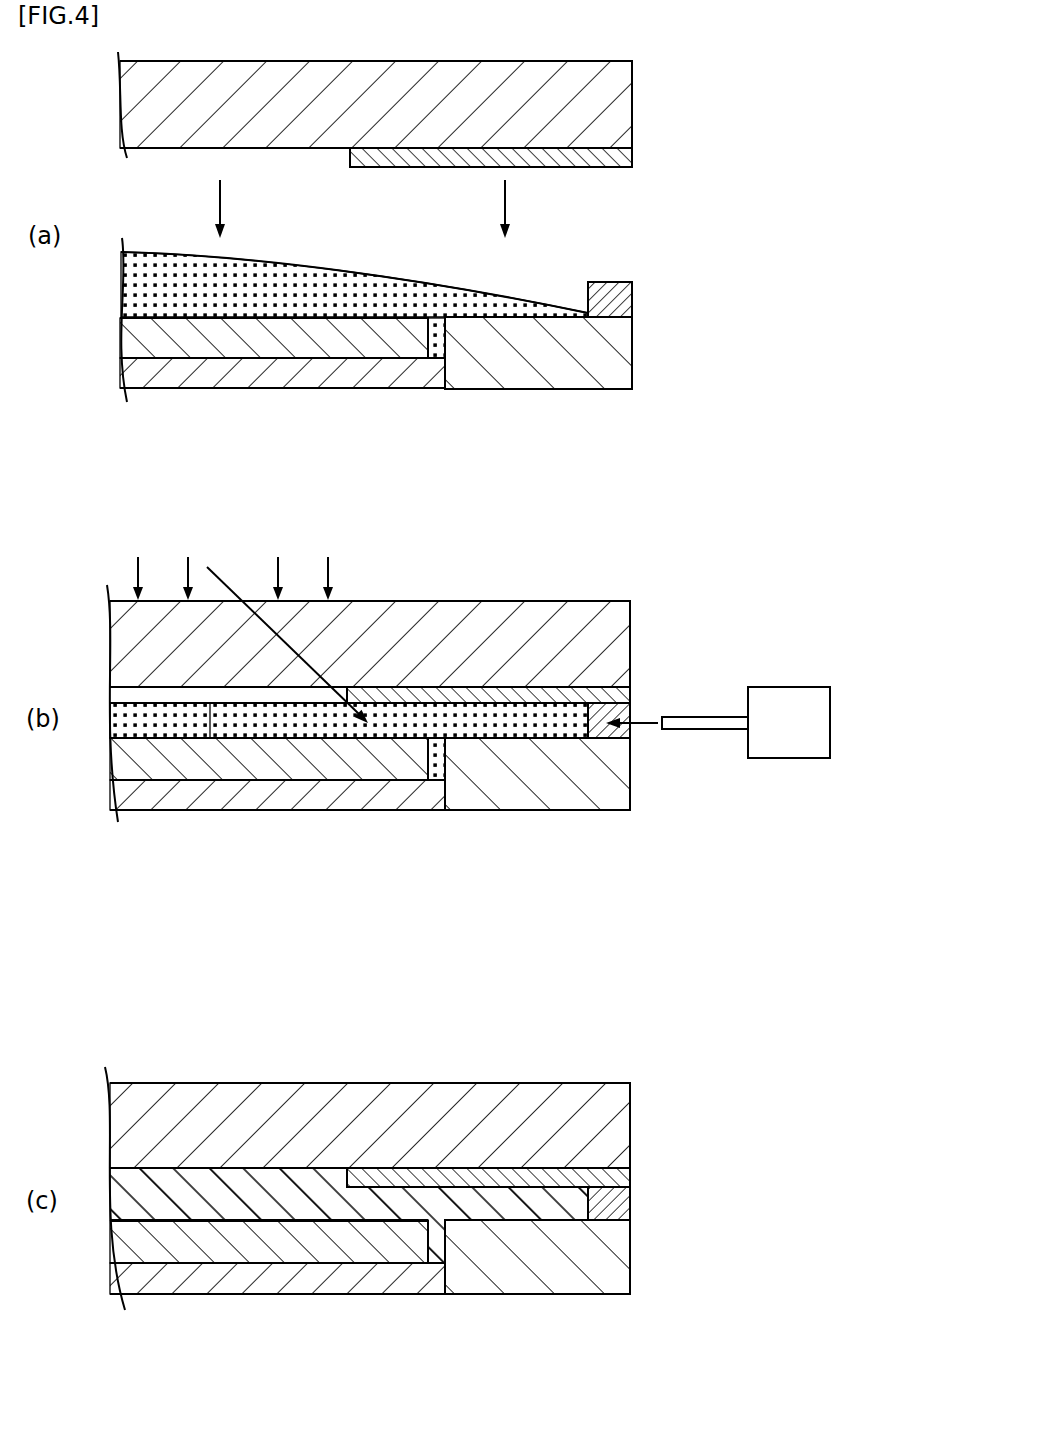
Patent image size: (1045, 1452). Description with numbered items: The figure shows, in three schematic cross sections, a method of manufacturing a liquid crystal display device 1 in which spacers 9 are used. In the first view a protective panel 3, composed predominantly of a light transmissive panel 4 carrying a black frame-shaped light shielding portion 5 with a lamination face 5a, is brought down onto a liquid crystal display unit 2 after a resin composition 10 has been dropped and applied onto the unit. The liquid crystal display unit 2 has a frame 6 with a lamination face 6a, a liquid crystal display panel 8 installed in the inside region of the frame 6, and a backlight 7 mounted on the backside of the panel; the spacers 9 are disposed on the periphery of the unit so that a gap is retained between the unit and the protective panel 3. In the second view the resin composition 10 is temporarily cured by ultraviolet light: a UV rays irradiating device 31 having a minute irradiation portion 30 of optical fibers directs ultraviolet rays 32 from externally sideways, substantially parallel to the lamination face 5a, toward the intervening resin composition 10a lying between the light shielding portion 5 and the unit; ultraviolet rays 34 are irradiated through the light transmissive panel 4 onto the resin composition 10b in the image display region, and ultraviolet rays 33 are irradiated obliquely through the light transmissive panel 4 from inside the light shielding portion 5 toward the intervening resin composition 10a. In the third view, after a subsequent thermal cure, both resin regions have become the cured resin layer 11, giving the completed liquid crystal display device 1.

The liquid crystal display device 1 is at (63, 1049).
The liquid crystal display unit 2 is at (409, 788).
The protective panel 3 is at (425, 613).
The light transmissive panel 4 is at (632, 108).
The light shielding portion 5 is at (632, 155).
The lamination face of the light shielding portion 5a is at (605, 168).
The frame 6 is at (632, 352).
The lamination face of the frame 6a is at (540, 310).
The backlight 7 is at (363, 388).
The liquid crystal display panel 8 is at (250, 335).
The spacer 9 is at (632, 300).
The resin composition 10 is at (368, 270).
The intervening resin composition 10a is at (460, 725).
The resin composition in the image display region 10b is at (190, 740).
The cured resin layer 11 is at (240, 1182).
The irradiation portion 30 is at (700, 730).
The UV rays irradiating device 31 is at (772, 687).
The ultraviolet rays 32 is at (645, 712).
The ultraviolet rays 33 is at (218, 572).
The ultraviolet rays 34 is at (136, 573).